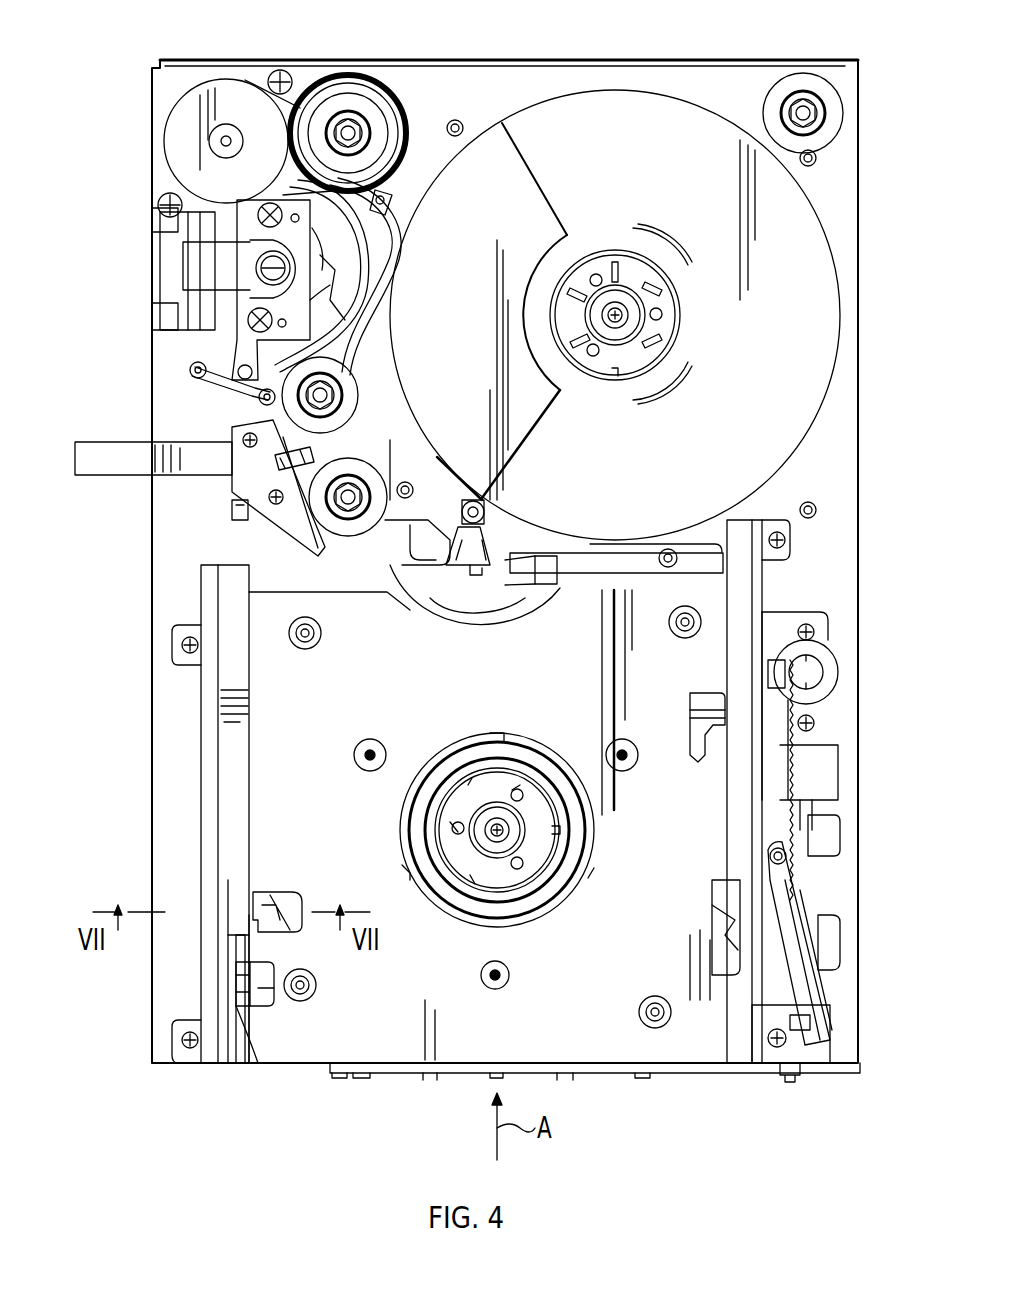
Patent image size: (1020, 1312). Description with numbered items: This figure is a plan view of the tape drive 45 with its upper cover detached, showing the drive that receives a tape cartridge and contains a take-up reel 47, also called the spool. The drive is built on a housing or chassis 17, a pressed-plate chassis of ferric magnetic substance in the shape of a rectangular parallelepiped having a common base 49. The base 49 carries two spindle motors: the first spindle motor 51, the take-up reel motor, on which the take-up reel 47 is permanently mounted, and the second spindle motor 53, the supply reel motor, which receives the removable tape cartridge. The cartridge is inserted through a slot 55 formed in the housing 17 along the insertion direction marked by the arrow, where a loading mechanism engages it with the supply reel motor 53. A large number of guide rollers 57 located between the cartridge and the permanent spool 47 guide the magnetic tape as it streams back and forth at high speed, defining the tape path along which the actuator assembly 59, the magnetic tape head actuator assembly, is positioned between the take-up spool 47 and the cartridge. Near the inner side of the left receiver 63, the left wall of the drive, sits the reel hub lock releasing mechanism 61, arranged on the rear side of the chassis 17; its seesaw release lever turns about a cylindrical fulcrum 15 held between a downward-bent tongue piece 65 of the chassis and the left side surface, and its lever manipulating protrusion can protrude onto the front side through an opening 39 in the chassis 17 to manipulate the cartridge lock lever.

The fulcrum 15 is at (262, 892).
The housing or chassis 17 is at (150, 762).
The opening 39 is at (256, 1063).
The tape drive 45 is at (132, 1076).
The take-up reel 47 is at (808, 205).
The base 49 is at (175, 710).
The first spindle motor 51 is at (655, 325).
The second spindle motor 53 is at (537, 850).
The slot 55 is at (742, 985).
The guide rollers 57 is at (348, 100).
The actuator assembly 59 is at (190, 349).
The reel hub lock releasing mechanism 61 is at (228, 995).
The left receiver 63 is at (210, 790).
The tongue piece 65 is at (262, 930).